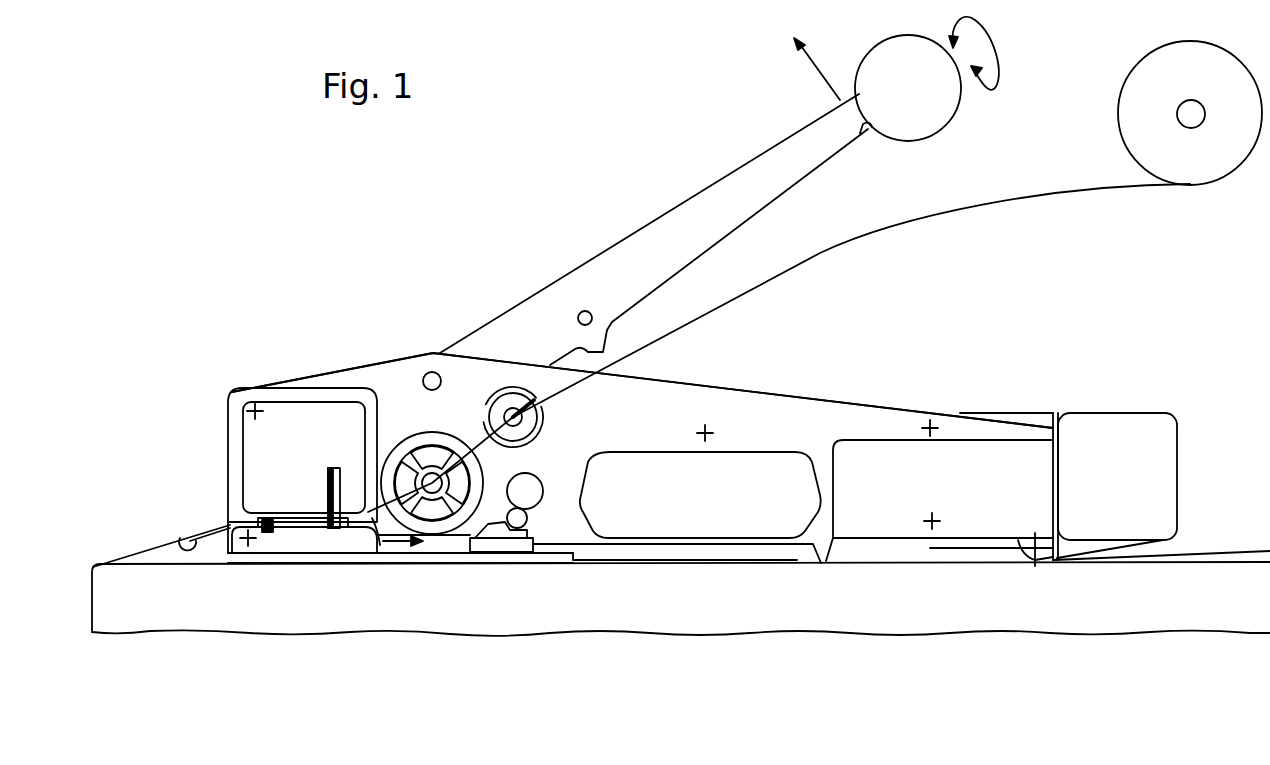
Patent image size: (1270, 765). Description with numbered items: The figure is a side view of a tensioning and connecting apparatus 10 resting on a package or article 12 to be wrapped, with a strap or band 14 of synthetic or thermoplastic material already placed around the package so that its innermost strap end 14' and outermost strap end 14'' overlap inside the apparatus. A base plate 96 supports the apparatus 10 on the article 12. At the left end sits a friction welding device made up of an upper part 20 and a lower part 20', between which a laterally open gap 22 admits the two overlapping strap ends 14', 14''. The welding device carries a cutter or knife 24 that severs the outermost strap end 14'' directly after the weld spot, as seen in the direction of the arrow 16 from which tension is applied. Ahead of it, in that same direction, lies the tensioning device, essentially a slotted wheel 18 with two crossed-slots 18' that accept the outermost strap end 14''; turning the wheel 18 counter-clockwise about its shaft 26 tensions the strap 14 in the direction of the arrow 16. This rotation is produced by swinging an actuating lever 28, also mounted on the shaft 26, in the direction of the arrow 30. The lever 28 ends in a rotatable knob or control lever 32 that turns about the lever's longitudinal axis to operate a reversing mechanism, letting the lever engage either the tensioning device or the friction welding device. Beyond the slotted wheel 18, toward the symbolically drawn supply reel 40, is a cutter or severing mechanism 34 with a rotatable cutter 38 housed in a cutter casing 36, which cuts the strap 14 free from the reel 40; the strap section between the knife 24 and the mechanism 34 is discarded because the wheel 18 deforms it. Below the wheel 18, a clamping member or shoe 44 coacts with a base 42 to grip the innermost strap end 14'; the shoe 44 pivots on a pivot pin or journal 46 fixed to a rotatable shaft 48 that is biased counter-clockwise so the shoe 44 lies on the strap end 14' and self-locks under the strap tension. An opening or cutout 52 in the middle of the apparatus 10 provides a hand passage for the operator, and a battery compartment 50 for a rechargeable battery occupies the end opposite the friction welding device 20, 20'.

The tensioning and connecting apparatus 10 is at (386, 292).
The package or article 12 is at (189, 610).
The strap or band 14 is at (641, 375).
The innermost strap end 14' is at (173, 525).
The outermost strap end 14'' is at (399, 567).
The arrow 16 is at (400, 545).
The slotted wheel 18 is at (432, 466).
The crossed-slots 18' is at (447, 447).
The friction welding device upper part 20 is at (302, 470).
The friction welding device lower part 20' is at (304, 570).
The gap 22 is at (228, 525).
The cutter or knife 24 is at (328, 487).
The shaft 26 is at (445, 488).
The actuating lever 28 is at (638, 229).
The arrow 30 is at (820, 72).
The rotatable knob or control lever 32 is at (905, 132).
The cutter or severing mechanism 34 is at (505, 390).
The cutter casing 36 is at (536, 437).
The rotatable cutter 38 is at (541, 430).
The supply reel 40 is at (1119, 128).
The base 42 is at (524, 553).
The clamping member or shoe 44 is at (497, 532).
The pivot pin or journal 46 is at (528, 520).
The rotatable shaft 48 is at (534, 491).
The battery compartment 50 is at (1100, 428).
The opening or cutout 52 is at (758, 452).
The base plate 96 is at (325, 550).